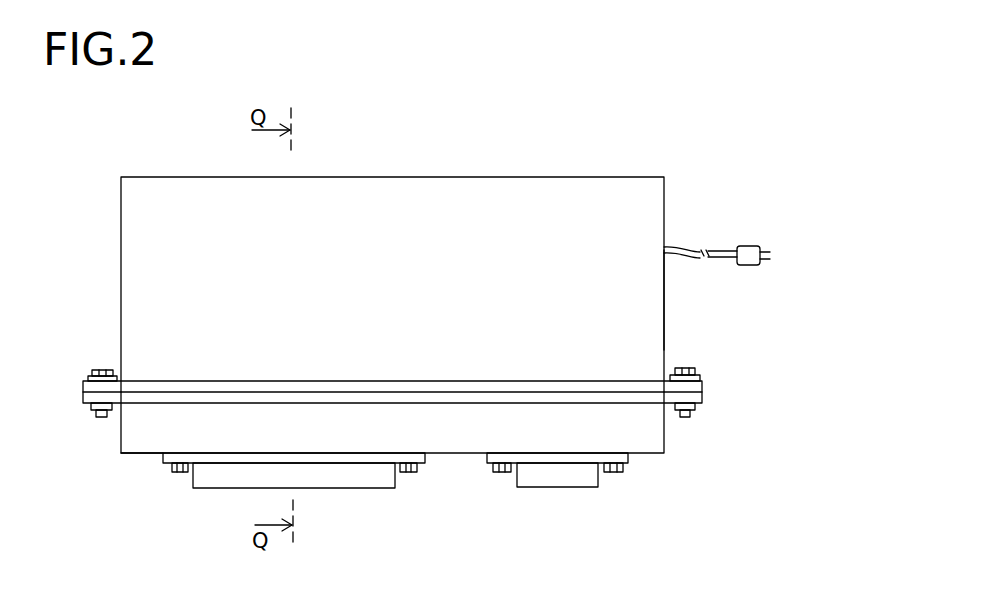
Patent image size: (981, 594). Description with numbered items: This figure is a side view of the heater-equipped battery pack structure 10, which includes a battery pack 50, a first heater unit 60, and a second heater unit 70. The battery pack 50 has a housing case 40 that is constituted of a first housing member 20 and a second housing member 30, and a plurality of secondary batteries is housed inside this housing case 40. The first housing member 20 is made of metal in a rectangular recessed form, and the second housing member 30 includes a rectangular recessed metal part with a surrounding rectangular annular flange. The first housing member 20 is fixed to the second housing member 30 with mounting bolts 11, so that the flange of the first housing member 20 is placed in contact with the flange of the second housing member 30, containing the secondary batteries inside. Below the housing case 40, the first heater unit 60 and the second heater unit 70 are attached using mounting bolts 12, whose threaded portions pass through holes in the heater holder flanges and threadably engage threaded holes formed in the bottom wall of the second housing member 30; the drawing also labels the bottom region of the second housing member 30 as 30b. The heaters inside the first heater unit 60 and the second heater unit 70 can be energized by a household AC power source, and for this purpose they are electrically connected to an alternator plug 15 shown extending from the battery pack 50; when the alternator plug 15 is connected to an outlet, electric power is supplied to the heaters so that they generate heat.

The heater-equipped battery pack structure 10 is at (486, 143).
The first housing member 20 is at (650, 214).
The second housing member 30 is at (658, 428).
The bottom surface of lower housing 30b is at (146, 455).
The housing case 40 is at (445, 359).
The battery pack 50 is at (667, 300).
The alternator plug 15 is at (752, 264).
The mounting bolt 11 is at (100, 370).
The mounting bolt 12 is at (178, 474).
The first heater unit 60 is at (358, 478).
The second heater unit 70 is at (565, 478).